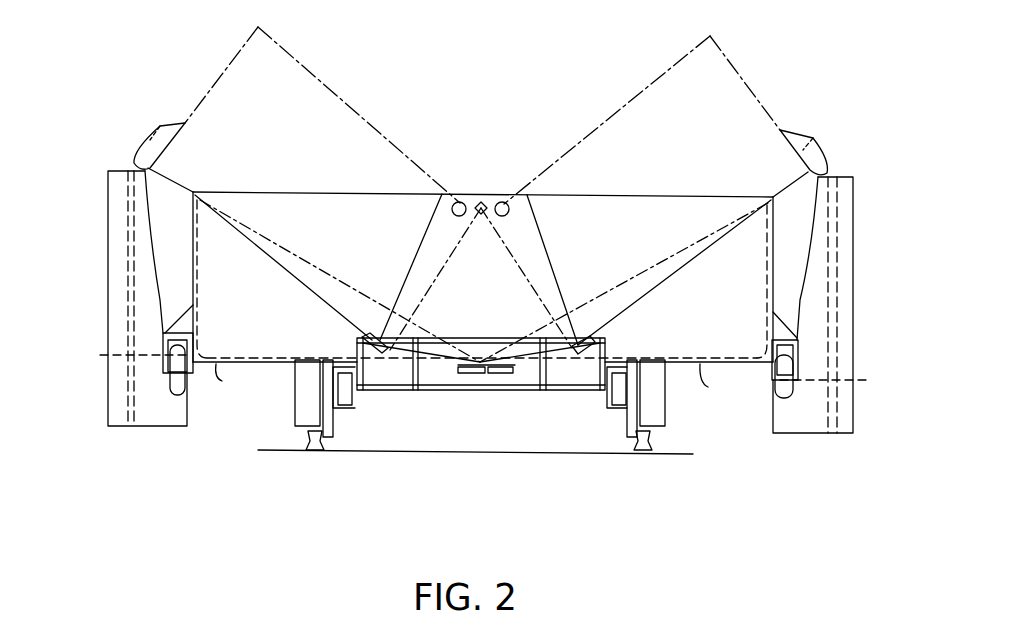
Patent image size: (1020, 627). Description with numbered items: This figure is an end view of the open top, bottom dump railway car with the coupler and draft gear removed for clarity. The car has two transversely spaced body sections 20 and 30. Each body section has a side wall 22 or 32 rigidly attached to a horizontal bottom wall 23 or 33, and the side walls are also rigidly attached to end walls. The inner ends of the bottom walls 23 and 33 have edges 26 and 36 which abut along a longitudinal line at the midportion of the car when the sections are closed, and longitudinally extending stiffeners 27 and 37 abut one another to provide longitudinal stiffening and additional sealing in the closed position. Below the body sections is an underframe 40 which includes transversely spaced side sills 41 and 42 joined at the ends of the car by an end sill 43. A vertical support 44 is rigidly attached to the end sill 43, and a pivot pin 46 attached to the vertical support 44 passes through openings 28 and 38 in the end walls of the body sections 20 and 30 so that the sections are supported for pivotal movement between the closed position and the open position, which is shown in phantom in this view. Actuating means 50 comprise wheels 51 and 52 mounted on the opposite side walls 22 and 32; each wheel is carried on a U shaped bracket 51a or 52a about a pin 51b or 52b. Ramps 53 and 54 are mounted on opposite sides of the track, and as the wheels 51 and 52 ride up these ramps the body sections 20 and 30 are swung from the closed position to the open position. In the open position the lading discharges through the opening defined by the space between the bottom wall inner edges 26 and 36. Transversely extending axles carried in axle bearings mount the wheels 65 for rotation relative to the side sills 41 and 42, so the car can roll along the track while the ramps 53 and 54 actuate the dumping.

The body section 20 is at (170, 242).
The side wall 22 is at (193, 265).
The bottom wall 23 is at (232, 380).
The edge 26 is at (382, 340).
The stiffener 27 is at (362, 345).
The opening 28 is at (453, 205).
The body section 30 is at (795, 250).
The side wall 32 is at (773, 283).
The bottom wall 33 is at (718, 386).
The edge 36 is at (580, 340).
The stiffener 37 is at (596, 338).
The opening 38 is at (508, 204).
The underframe 40 is at (290, 467).
The side sill 41 is at (347, 403).
The side sill 42 is at (613, 407).
The end sill 43 is at (372, 340).
The vertical support 44 is at (495, 302).
The pivot pin 46 is at (502, 202).
The actuating means 50 is at (868, 302).
The wheel 51 is at (175, 375).
The U shaped bracket 51a is at (165, 348).
The pin 51b is at (120, 358).
The wheel 52 is at (790, 390).
The U shaped bracket 52a is at (798, 352).
The pin 52b is at (844, 381).
The ramp 53 is at (115, 198).
The ramp 54 is at (850, 198).
The wheels 65 is at (303, 405).